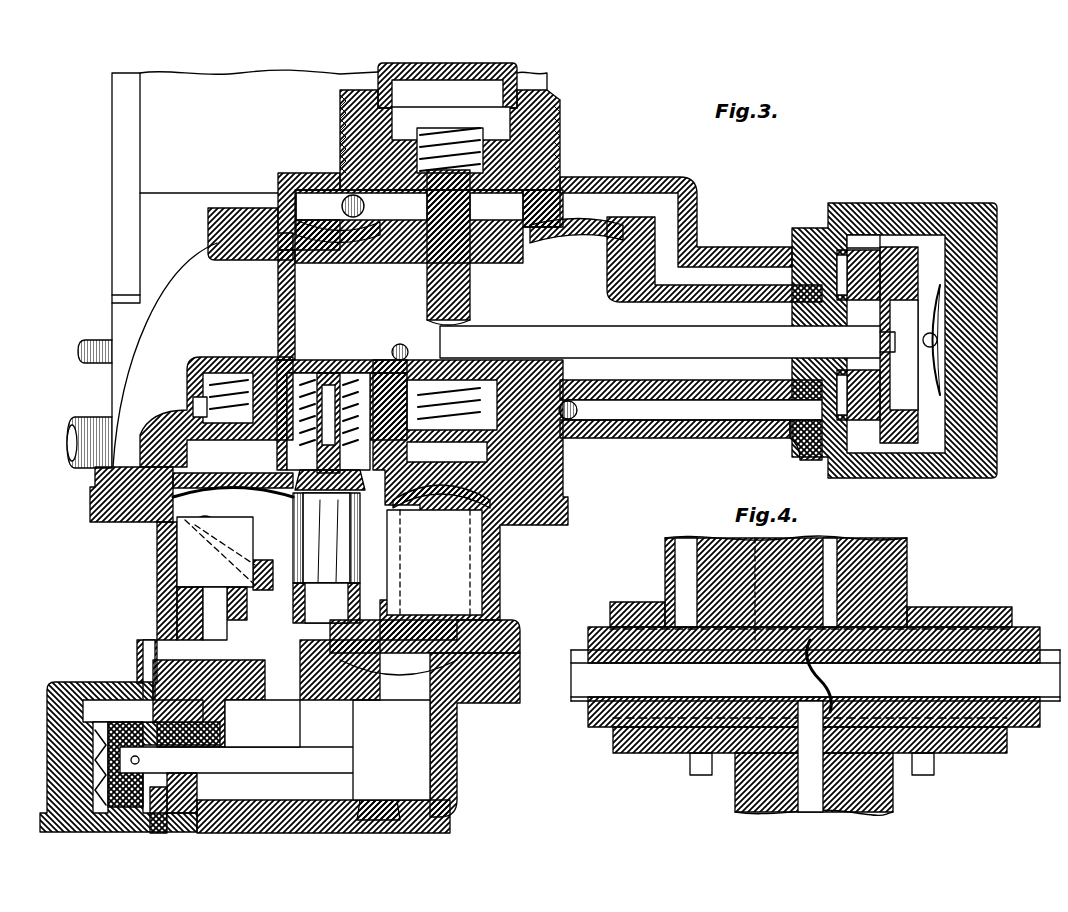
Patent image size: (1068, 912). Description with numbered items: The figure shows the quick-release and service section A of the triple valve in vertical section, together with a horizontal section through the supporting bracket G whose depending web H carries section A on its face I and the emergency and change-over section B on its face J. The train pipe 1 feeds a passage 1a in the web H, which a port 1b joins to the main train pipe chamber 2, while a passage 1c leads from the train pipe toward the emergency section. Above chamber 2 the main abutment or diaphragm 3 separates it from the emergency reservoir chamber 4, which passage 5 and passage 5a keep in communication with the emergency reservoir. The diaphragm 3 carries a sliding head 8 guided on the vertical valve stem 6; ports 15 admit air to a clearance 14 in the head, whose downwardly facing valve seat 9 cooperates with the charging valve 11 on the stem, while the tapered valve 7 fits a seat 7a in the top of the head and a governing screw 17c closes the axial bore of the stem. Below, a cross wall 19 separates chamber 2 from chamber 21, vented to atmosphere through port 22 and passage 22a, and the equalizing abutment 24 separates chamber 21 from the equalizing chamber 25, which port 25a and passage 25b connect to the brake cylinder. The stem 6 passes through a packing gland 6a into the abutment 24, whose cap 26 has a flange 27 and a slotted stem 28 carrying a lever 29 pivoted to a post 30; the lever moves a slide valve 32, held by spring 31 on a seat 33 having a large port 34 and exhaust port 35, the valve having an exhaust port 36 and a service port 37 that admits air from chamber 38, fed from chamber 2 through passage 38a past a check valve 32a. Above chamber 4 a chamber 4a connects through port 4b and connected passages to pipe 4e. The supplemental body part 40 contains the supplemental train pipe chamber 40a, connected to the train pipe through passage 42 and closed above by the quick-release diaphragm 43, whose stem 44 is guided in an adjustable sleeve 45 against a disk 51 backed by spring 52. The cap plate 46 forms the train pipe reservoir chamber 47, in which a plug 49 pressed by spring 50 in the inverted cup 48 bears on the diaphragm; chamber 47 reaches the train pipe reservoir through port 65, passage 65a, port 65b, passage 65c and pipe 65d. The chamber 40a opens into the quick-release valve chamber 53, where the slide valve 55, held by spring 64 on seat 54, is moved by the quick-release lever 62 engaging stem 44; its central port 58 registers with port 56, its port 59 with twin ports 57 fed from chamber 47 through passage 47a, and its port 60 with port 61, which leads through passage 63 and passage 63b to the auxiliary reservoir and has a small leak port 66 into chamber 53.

In FIG. 3, the supporting bracket G is at (112, 142).
In FIG. 4, the quick-release and service section A is at (910, 557).
In FIG. 4, the emergency and change-over section B is at (893, 812).
In FIG. 4, the depending web H is at (1015, 630).
In FIG. 4, the face of the web I is at (640, 640).
In FIG. 4, the face of the web J is at (640, 740).
In FIG. 3, the train pipe 1 is at (72, 420).
In FIG. 4, the train pipe 1 is at (582, 700).
In FIG. 3, the passage 1a is at (152, 411).
In FIG. 4, the passage 1a is at (724, 681).
In FIG. 3, the port 1b is at (193, 528).
In FIG. 4, the port 1b is at (686, 538).
In FIG. 4, the passage 1c is at (800, 775).
In FIG. 3, the main train pipe chamber 2 is at (188, 562).
In FIG. 3, the main abutment 3 is at (455, 505).
In FIG. 3, the emergency reservoir chamber 4 is at (565, 455).
In FIG. 3, the chamber 4a is at (190, 400).
In FIG. 3, the port 4b is at (225, 355).
In FIG. 3, the pipe 4e is at (82, 338).
In FIG. 3, the passage 5 is at (270, 358).
In FIG. 4, the passage 5a is at (758, 640).
In FIG. 3, the vertical valve stem 6 is at (368, 475).
In FIG. 3, the stuffing box or packing gland 6a is at (280, 595).
In FIG. 3, the downwardly tapered valve 7 is at (355, 458).
In FIG. 3, the valve seat 7a is at (305, 470).
In FIG. 3, the sliding head 8 is at (233, 474).
In FIG. 3, the valve seat 9 is at (258, 460).
In FIG. 3, the charging valve 11 is at (295, 525).
In FIG. 3, the clearance 14 is at (447, 451).
In FIG. 3, the ports 15 is at (397, 531).
In FIG. 3, the governing screw 17c is at (325, 372).
In FIG. 3, the cross wall 19 is at (434, 562).
In FIG. 3, the chamber 21 is at (470, 640).
In FIG. 3, the port 22 is at (500, 615).
In FIG. 3, the passage 22a is at (538, 560).
In FIG. 3, the equalizing abutment 24 is at (470, 652).
In FIG. 3, the equalizing chamber 25 is at (432, 735).
In FIG. 3, the passage 25a is at (209, 705).
In FIG. 3, the passage 25b is at (440, 548).
In FIG. 3, the cap 26 is at (262, 725).
In FIG. 3, the circular flange 27 is at (385, 700).
In FIG. 3, the slotted stem 28 is at (391, 750).
In FIG. 3, the lever 29 is at (280, 773).
In FIG. 3, the rigid post 30 is at (392, 788).
In FIG. 3, the spring 31 is at (93, 740).
In FIG. 3, the slide valve 32 is at (100, 700).
In FIG. 3, the check valve 32a is at (205, 618).
In FIG. 3, the valve seat 33 is at (128, 700).
In FIG. 3, the port 34 is at (215, 773).
In FIG. 3, the exhaust port 35 is at (260, 805).
In FIG. 3, the exhaust port 36 is at (200, 812).
In FIG. 3, the service port 37 is at (108, 720).
In FIG. 3, the chamber 38 is at (55, 682).
In FIG. 3, the passage 38a is at (165, 660).
In FIG. 3, the supplemental body part 40 is at (195, 360).
In FIG. 3, the supplemental train pipe chamber 40a is at (300, 283).
In FIG. 3, the passage 42 is at (397, 315).
In FIG. 3, the quick-release diaphragm 43 is at (590, 222).
In FIG. 3, the stem 44 is at (472, 295).
In FIG. 3, the sleeve 45 is at (575, 372).
In FIG. 3, the cap plate 46 is at (282, 190).
In FIG. 3, the train pipe reservoir chamber 47 is at (308, 173).
In FIG. 3, the passage 47a is at (718, 265).
In FIG. 3, the inverted cup 48 is at (425, 128).
In FIG. 3, the movable plug 49 is at (409, 205).
In FIG. 3, the spring 50 is at (460, 130).
In FIG. 3, the disk 51 is at (480, 385).
In FIG. 3, the spring 52 is at (407, 340).
In FIG. 3, the quick-release valve chamber 53 is at (997, 357).
In FIG. 3, the valve seat 54 is at (855, 232).
In FIG. 3, the quick-release slide valve 55 is at (900, 250).
In FIG. 3, the port 56 is at (855, 372).
In FIG. 3, the twin ports 57 is at (850, 288).
In FIG. 3, the port 58 is at (865, 325).
In FIG. 3, the port 59 is at (918, 333).
In FIG. 3, the port 60 is at (960, 398).
In FIG. 3, the port 61 is at (845, 450).
In FIG. 3, the quick-release lever 62 is at (610, 328).
In FIG. 3, the passage 63 is at (738, 440).
In FIG. 3, the passage 63b is at (575, 412).
In FIG. 3, the spring 64 is at (945, 320).
In FIG. 3, the passage 65 is at (352, 195).
In FIG. 3, the passage 65a is at (400, 280).
In FIG. 4, the passage 65a is at (840, 580).
In FIG. 4, the port 65b is at (845, 655).
In FIG. 4, the passage 65c is at (968, 690).
In FIG. 4, the pipe 65d is at (1030, 730).
In FIG. 3, the leak port 66 is at (882, 462).